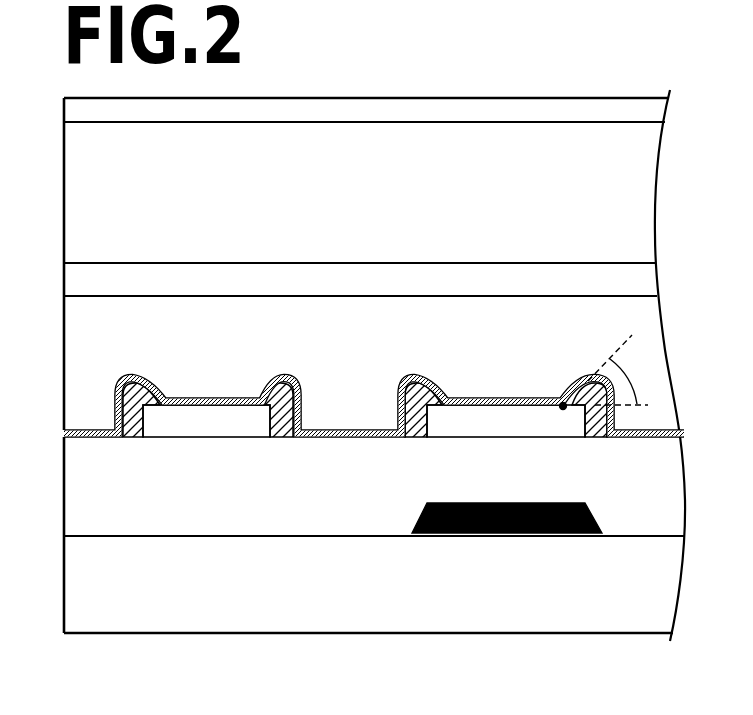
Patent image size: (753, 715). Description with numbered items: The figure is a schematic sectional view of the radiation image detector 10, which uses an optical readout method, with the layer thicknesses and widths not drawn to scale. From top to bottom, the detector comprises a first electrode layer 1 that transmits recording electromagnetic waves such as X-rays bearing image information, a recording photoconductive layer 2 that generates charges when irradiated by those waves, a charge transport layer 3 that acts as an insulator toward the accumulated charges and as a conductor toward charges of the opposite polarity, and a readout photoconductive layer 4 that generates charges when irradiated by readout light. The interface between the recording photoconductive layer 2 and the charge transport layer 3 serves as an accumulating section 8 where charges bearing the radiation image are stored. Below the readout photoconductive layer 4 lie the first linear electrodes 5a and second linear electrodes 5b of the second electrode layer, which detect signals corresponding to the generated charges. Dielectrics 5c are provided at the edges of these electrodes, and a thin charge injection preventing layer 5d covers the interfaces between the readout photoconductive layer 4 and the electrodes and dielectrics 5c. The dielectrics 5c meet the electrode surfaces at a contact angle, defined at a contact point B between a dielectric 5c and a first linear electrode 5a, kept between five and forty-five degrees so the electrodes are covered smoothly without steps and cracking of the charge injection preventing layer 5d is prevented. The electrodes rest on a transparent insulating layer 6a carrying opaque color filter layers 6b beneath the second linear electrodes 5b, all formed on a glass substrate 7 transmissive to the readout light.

The first electrode layer 1 is at (72, 113).
The recording photoconductive layer 2 is at (72, 185).
The charge transport layer 3 is at (72, 286).
The readout photoconductive layer 4 is at (72, 339).
The first linear electrodes 5a is at (197, 414).
The second linear electrodes 5b is at (502, 416).
The dielectrics 5c is at (136, 383).
The charge injection preventing layer 5d is at (640, 426).
The transparent insulating layer 6a is at (72, 492).
The color filter layers 6b is at (580, 537).
The substrate 7 is at (72, 592).
The accumulating section 8 is at (103, 260).
The radiation image detector 10 is at (591, 79).
The contact point B is at (561, 400).